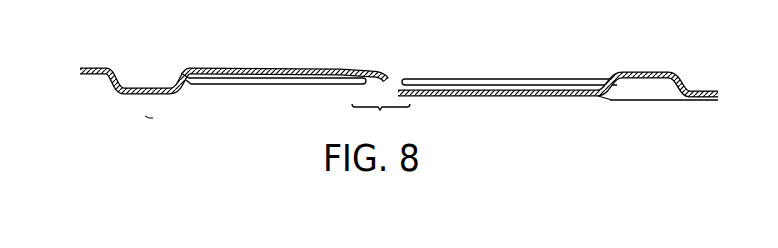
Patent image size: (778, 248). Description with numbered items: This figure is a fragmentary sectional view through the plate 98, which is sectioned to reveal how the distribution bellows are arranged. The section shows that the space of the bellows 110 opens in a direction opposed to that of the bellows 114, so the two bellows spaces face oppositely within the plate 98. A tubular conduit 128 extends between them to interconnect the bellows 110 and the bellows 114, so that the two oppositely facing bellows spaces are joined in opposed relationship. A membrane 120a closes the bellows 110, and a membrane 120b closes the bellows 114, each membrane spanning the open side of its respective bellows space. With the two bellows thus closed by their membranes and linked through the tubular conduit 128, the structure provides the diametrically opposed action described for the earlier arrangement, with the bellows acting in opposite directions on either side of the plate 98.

The membrane 120a is at (130, 39).
The bellows 110 is at (158, 82).
The tubular conduit 128 is at (482, 78).
The membrane 120b is at (617, 104).
The bellows 114 is at (640, 85).
The plate 98 is at (717, 104).